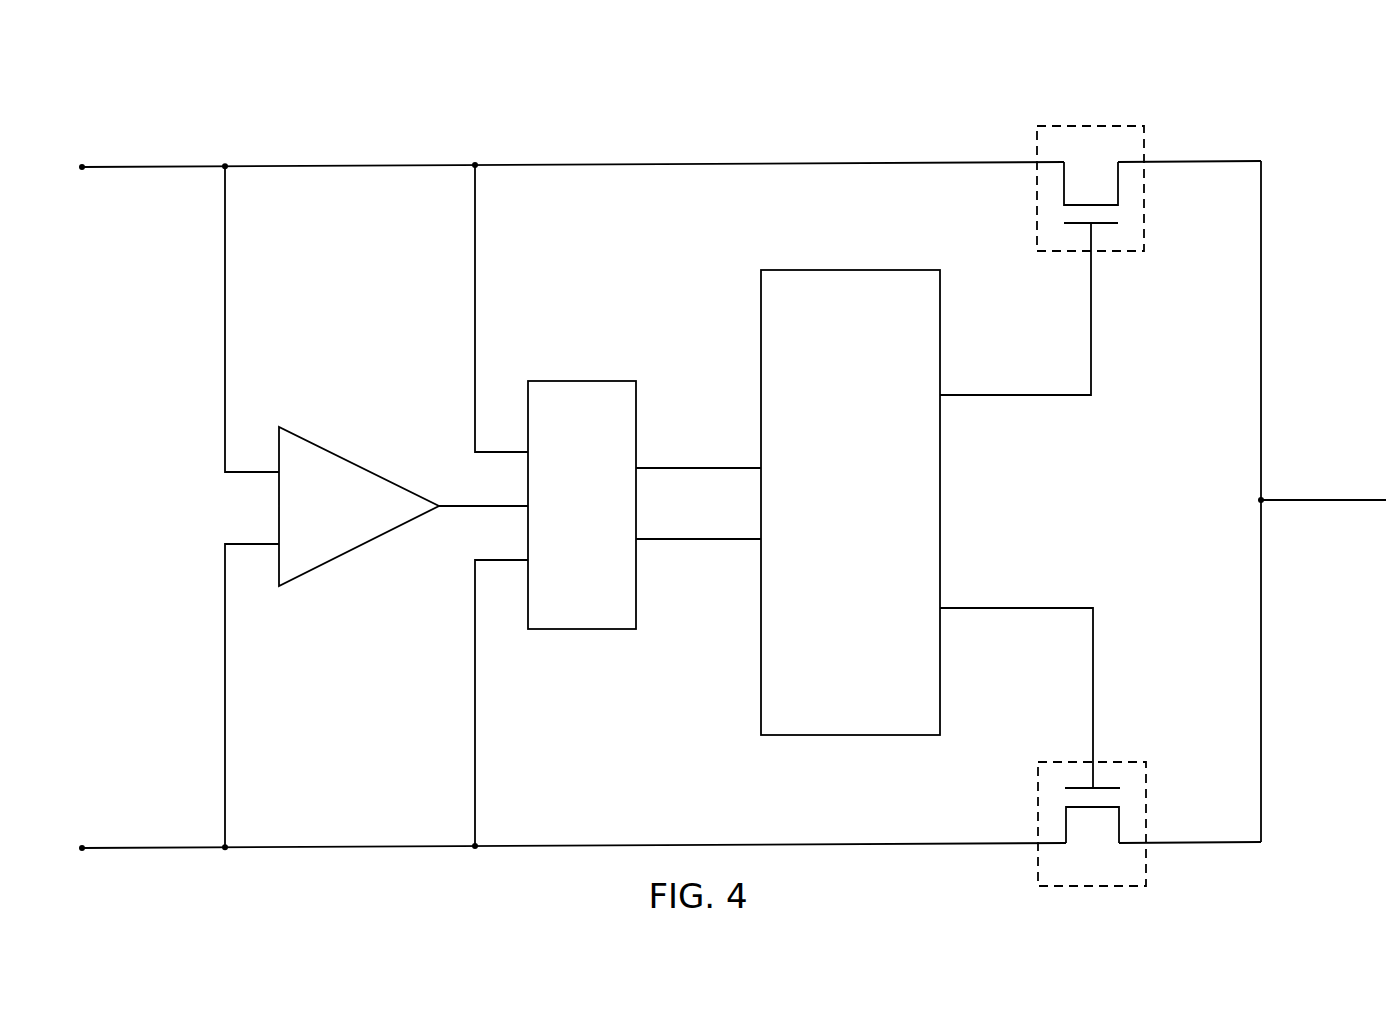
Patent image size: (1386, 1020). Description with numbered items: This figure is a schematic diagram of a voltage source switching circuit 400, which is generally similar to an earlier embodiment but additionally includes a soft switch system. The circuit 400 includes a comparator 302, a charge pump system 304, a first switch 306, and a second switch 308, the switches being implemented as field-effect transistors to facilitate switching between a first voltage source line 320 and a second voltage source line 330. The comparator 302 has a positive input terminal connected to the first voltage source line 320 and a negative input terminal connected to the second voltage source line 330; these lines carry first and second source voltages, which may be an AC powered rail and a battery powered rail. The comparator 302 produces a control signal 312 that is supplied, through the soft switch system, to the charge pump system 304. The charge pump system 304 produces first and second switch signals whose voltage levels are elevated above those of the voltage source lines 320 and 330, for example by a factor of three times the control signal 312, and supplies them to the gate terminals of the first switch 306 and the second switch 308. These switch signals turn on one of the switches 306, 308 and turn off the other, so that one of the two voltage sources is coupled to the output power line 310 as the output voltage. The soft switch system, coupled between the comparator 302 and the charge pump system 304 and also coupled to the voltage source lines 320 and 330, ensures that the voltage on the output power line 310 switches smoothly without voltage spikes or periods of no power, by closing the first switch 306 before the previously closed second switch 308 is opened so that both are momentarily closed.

The voltage source switching circuit 400 is at (353, 90).
The first voltage source line 320 is at (93, 157).
The second voltage source line 330 is at (90, 855).
The output power line 310 is at (1345, 502).
The comparator 302 is at (337, 538).
The control signal 312 is at (466, 502).
The charge pump system 304 is at (588, 378).
The first switch 306 is at (1130, 117).
The second switch 308 is at (1120, 757).